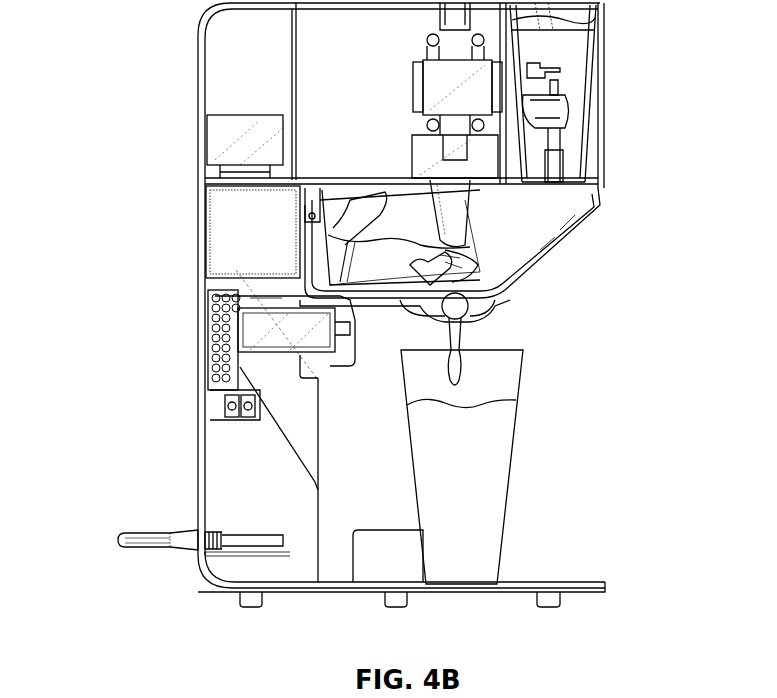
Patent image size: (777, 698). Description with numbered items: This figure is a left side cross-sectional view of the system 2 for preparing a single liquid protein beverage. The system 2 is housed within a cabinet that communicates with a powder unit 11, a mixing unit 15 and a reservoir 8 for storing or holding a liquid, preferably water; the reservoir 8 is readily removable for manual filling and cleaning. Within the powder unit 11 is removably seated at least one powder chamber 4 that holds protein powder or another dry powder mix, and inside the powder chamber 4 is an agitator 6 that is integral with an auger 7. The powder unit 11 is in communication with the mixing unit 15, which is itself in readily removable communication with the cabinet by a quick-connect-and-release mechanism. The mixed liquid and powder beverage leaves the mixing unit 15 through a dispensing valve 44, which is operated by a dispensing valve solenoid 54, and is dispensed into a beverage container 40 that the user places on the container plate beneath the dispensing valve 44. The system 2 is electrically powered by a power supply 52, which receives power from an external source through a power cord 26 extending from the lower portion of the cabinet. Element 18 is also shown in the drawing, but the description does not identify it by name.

The system 2 is at (110, 75).
The powder chamber 4 is at (602, 14).
The agitator 6 is at (562, 80).
The auger 7 is at (563, 162).
The reservoir 8 is at (215, 210).
The powder unit 11 is at (610, 134).
The mixing unit 15 is at (600, 218).
The whisk 18 is at (474, 256).
The power cord 26 is at (118, 560).
The beverage container 40 is at (490, 483).
The dispensing valve 44 is at (494, 316).
The power supply 52 is at (208, 380).
The dispensing valve solenoid 54 is at (305, 351).